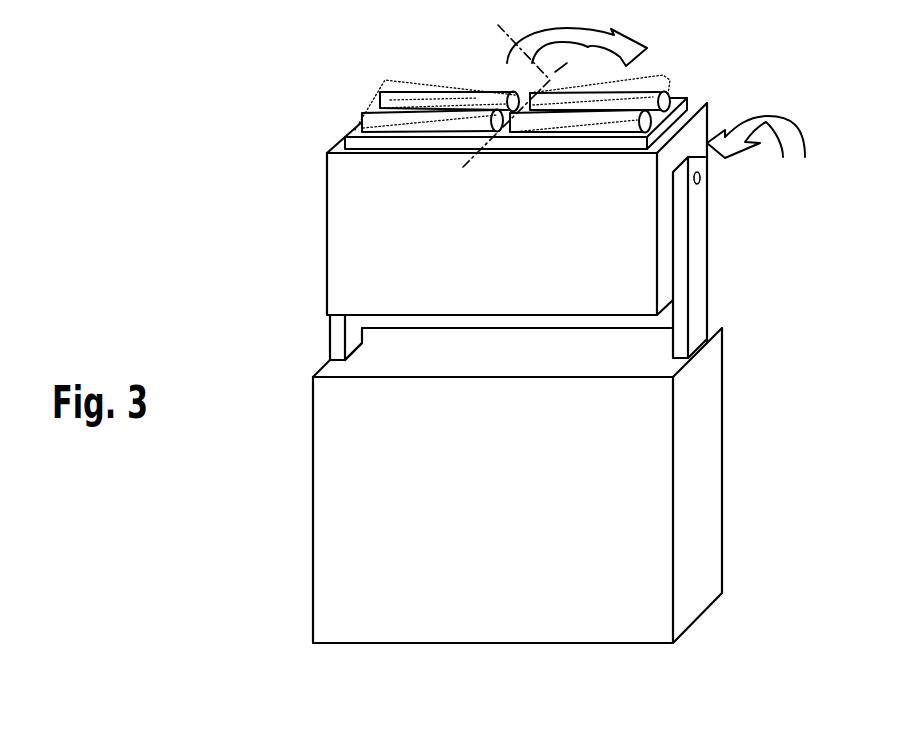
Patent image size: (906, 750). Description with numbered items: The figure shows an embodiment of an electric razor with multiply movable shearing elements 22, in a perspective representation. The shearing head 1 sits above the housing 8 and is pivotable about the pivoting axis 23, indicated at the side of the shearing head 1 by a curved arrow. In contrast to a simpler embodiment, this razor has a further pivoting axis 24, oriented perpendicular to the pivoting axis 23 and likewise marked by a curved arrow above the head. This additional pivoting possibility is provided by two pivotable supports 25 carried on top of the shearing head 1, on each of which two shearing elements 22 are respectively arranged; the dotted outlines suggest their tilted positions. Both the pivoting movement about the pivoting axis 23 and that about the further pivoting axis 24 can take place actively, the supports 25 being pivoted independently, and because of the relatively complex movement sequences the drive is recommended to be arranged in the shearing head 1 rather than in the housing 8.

The shearing head 1 is at (357, 232).
The housing 8 is at (690, 468).
The shearing elements 22 is at (405, 118).
The pivoting axis 23 is at (700, 180).
The further pivoting axis 24 is at (555, 83).
The pivotable supports 25 is at (362, 133).